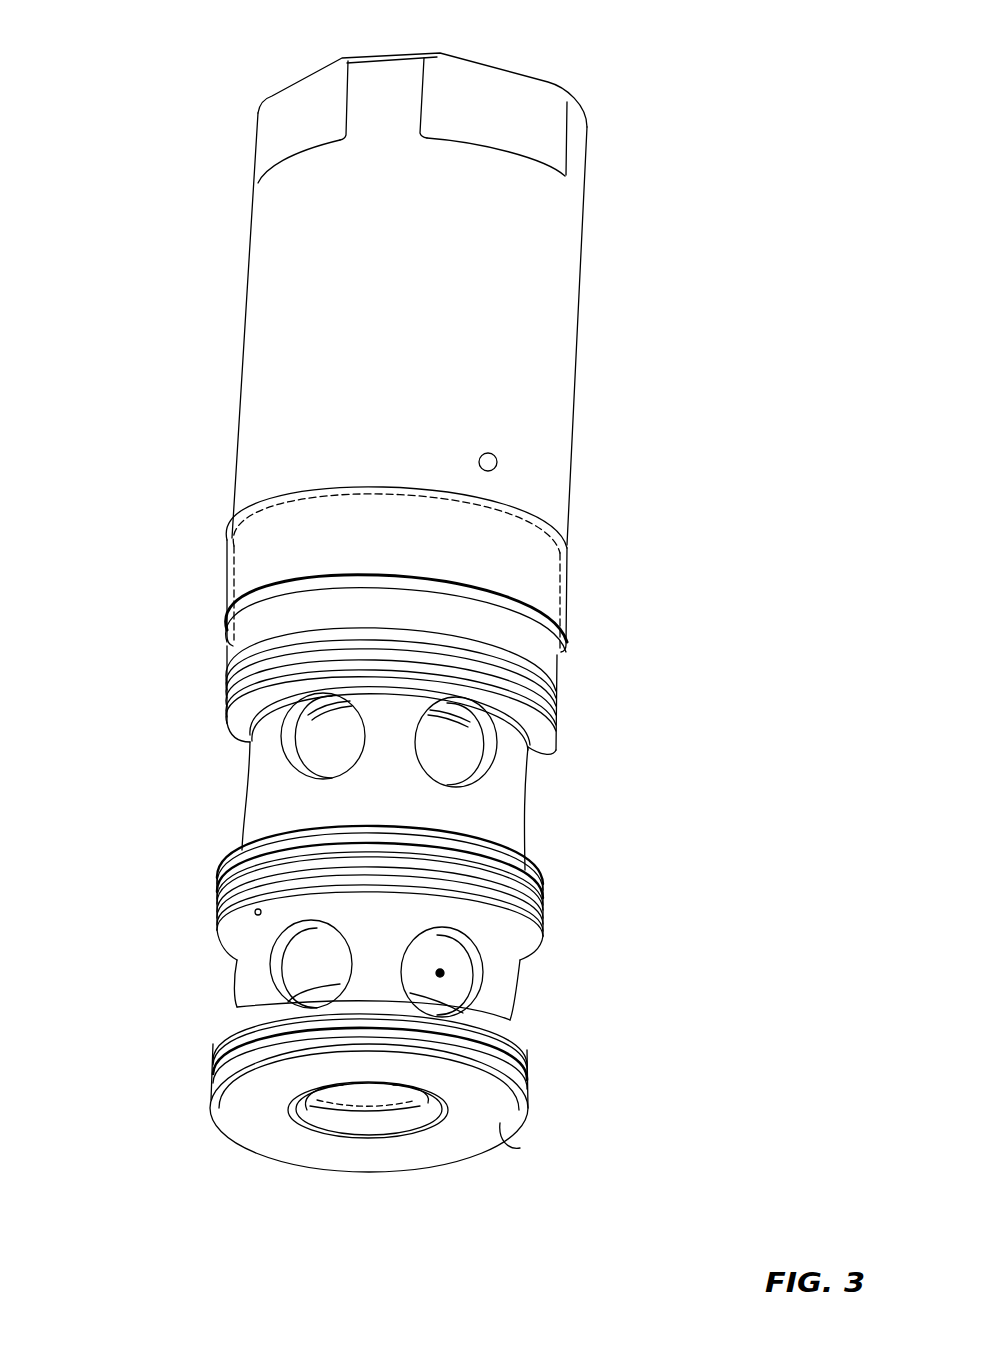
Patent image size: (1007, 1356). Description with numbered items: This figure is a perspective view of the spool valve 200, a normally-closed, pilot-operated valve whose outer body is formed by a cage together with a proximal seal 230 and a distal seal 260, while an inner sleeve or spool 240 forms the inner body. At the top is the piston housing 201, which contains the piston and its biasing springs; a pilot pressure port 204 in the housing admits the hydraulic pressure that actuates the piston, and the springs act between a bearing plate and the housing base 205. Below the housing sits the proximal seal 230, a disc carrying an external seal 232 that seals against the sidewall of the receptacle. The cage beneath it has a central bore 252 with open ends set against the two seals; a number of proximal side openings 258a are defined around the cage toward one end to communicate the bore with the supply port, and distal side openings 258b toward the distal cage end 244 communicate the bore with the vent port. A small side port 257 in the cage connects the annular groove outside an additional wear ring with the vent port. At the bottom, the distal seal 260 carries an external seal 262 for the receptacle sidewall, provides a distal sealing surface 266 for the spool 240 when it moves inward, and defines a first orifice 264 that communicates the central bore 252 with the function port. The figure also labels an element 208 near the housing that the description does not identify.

The spool valve 200 is at (597, 100).
The piston housing 201 is at (250, 258).
The pilot pressure port 204 is at (497, 463).
The sleeve 208 is at (227, 568).
The housing base 205 is at (577, 613).
The external seal 232 is at (230, 685).
The proximal seal 230 is at (553, 673).
The proximal side openings 258a is at (469, 763).
The central bore 252 is at (221, 885).
The side port 257 is at (254, 912).
The distal side openings 258b is at (296, 972).
The inner sleeve or spool 240 is at (444, 973).
The cage end 244 is at (490, 1016).
The external seal 262 is at (213, 1071).
The distal sealing surface 266 is at (512, 1078).
The first orifice 264 is at (327, 1119).
The distal seal 260 is at (520, 1148).